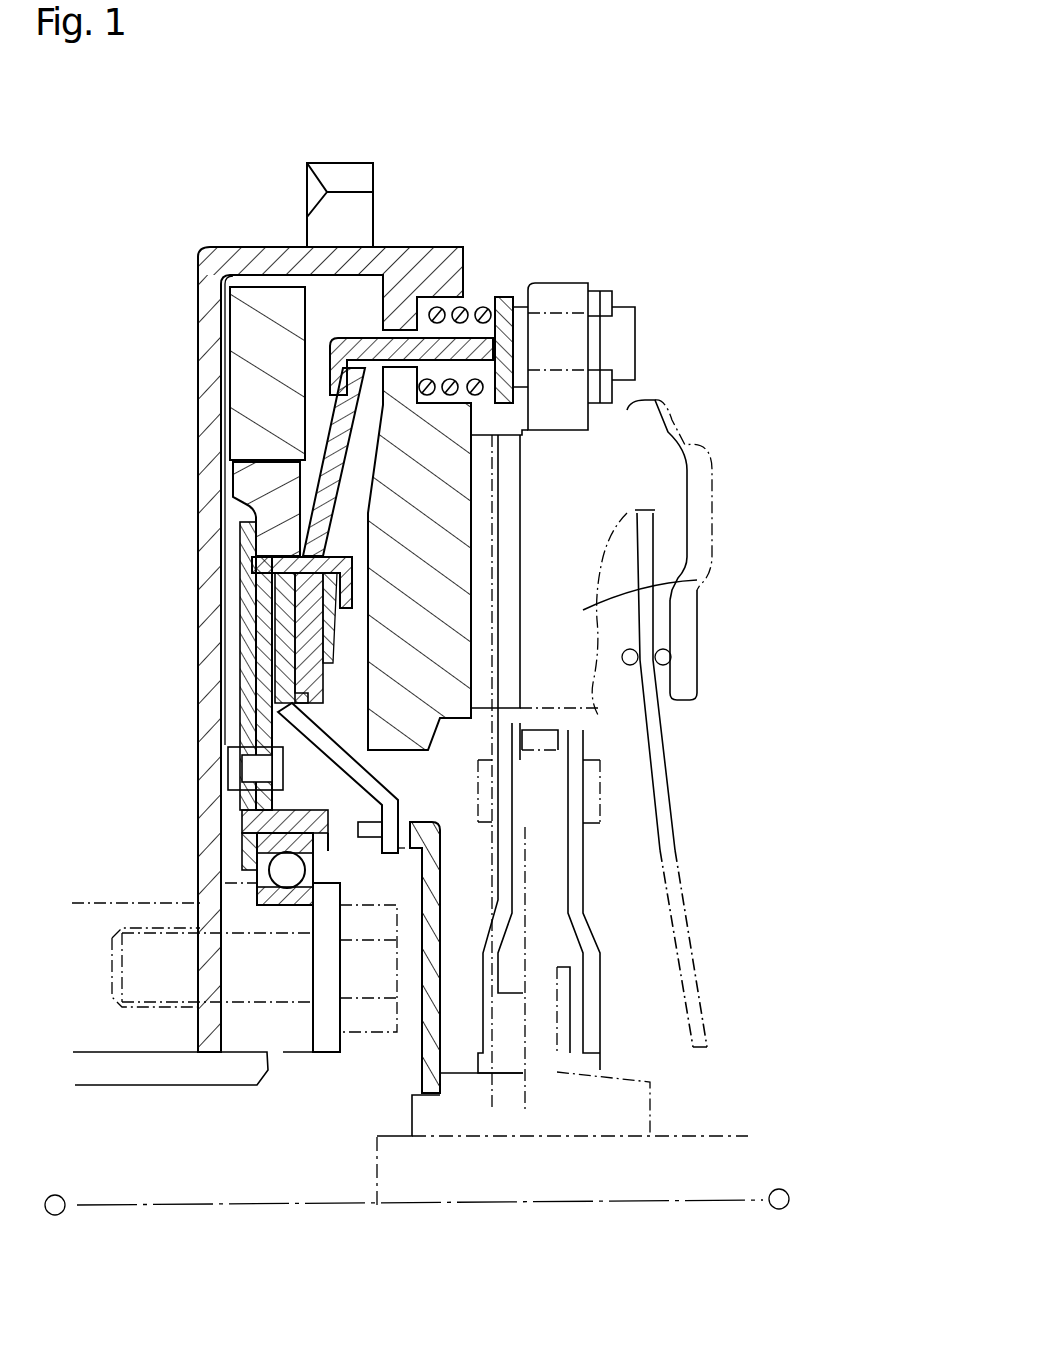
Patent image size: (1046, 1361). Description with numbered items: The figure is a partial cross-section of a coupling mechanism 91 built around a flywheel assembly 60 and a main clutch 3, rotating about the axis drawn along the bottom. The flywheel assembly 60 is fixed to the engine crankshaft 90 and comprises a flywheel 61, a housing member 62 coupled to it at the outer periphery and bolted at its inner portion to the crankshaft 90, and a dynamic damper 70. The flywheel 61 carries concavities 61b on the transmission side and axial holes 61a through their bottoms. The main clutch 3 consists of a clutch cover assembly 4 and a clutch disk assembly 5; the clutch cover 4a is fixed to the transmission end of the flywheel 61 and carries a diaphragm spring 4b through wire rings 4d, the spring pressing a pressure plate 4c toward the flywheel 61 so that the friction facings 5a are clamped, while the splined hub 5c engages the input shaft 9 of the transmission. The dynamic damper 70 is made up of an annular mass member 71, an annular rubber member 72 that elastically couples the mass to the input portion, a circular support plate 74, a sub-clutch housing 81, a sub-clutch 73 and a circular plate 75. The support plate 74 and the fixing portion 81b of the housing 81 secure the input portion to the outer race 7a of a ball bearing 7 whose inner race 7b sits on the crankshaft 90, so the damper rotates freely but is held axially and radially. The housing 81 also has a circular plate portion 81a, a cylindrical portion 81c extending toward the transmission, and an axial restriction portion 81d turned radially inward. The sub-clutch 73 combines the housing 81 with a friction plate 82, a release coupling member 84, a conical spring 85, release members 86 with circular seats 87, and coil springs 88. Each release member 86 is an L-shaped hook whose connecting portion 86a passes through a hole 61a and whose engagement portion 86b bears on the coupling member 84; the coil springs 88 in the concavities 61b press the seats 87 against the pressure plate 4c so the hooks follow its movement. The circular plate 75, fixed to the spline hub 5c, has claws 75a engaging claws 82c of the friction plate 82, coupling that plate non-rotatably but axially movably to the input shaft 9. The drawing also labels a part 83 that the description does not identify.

The main clutch 3 is at (670, 222).
The clutch cover assembly 4 is at (592, 276).
The clutch cover 4a is at (657, 675).
The annular diaphragm spring 4b is at (685, 953).
The pressure plate 4c is at (697, 580).
The wire rings 4d is at (671, 652).
The clutch disk assembly 5 is at (510, 425).
The friction facings 5a is at (510, 590).
The splined hub 5c is at (645, 1092).
The ball bearing 7 is at (222, 830).
The outer race 7a is at (257, 838).
The inner race 7b is at (258, 894).
The input shaft 9 is at (712, 1133).
The flywheel assembly 60 is at (414, 180).
The flywheel 61 is at (485, 533).
The holes 61a is at (325, 330).
The concavities 61b is at (428, 300).
The housing member 62 is at (207, 343).
The dynamic damper 70 is at (320, 353).
The annular mass member 71 is at (243, 327).
The annular rubber member 72 is at (270, 500).
The sub-clutch 73 is at (460, 513).
The circular support plate 74 is at (257, 743).
The circular plate 75 is at (417, 1049).
The claws 75a is at (402, 826).
The sub-clutch housing 81 is at (248, 665).
The circular plate portion 81a is at (300, 565).
The fixing portion 81b is at (328, 848).
The cylindrical portion 81c is at (245, 542).
The axial restriction portion 81d is at (353, 590).
The friction plate 82 is at (350, 786).
The claws 82c is at (400, 848).
The spring 83 is at (296, 622).
The release coupling member 84 is at (343, 527).
The conical spring 85 is at (333, 642).
The release members 86 is at (330, 356).
The connecting portion 86a is at (462, 334).
The engagement portion 86b is at (330, 378).
The circular seats 87 is at (501, 298).
The coil springs 88 is at (472, 337).
The crankshaft 90 is at (100, 902).
The coupling mechanism 91 is at (605, 120).